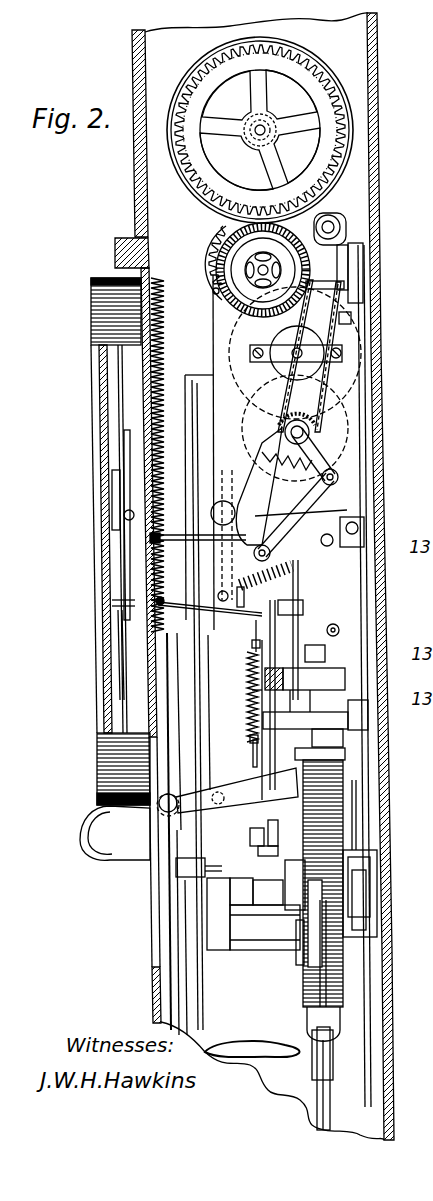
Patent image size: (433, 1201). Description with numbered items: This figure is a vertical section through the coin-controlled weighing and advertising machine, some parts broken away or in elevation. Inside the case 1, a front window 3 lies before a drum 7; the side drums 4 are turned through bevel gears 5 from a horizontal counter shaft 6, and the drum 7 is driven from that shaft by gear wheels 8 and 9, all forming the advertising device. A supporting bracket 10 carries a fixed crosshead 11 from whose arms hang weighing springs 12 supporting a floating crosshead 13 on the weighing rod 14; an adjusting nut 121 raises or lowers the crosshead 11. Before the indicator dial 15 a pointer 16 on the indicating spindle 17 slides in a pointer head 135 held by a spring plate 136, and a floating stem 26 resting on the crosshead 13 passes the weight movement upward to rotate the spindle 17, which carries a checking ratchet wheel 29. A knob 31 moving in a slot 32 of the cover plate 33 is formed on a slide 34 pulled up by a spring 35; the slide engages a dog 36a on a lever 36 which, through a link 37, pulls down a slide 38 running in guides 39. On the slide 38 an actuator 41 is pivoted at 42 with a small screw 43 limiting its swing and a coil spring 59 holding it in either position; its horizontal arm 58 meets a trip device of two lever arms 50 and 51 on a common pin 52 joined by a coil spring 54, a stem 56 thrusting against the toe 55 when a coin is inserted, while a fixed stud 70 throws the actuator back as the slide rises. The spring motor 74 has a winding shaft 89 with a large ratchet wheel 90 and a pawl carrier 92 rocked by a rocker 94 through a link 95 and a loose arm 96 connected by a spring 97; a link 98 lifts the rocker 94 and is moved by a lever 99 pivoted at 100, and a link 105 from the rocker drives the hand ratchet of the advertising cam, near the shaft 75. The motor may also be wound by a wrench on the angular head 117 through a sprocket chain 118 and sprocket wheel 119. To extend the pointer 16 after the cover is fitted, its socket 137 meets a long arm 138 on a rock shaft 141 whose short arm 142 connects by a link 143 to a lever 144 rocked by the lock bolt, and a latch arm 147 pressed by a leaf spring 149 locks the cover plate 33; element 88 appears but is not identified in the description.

The case 1 is at (384, 864).
The front window 3 is at (133, 148).
The rotatable drums 4 is at (272, 1068).
The bevel gears 5 is at (212, 268).
The horizontal counter shaft 6 is at (212, 256).
The drum 7 is at (300, 60).
The gear wheel 8 is at (196, 170).
The gear wheel 9 is at (222, 230).
The supporting bracket 10 is at (345, 788).
The fixed crosshead 11 is at (340, 708).
The weighing springs 12 is at (310, 985).
The floating crosshead 13 is at (314, 1062).
The weighing rod 14 is at (331, 1112).
The indicator dial 15 is at (98, 750).
The indicating pointer 16 is at (112, 603).
The indicating spindle 17 is at (172, 533).
The floating stem 26 is at (281, 680).
The ratchet wheel 29 is at (229, 595).
The knob 31 is at (92, 858).
The slot 32 is at (149, 912).
The cover plate 33 is at (152, 988).
The slide 34 is at (170, 705).
The spring 35 is at (165, 332).
The lever 36 is at (215, 906).
The dog 36a is at (176, 868).
The link 37 is at (262, 778).
The slide 38 is at (270, 640).
The guides 39 is at (268, 678).
The actuator 41 is at (250, 654).
The pivot 42 is at (250, 739).
The small screw 43 is at (250, 700).
The lever arm 50 is at (258, 836).
The lever arm 51 is at (234, 832).
The common pin 52 is at (245, 847).
The coil spring 54 is at (270, 893).
The toe 55 is at (298, 910).
The stem 56 is at (310, 962).
The horizontal arm 58 is at (253, 752).
The coil spring 59 is at (250, 692).
The fixed stud 70 is at (296, 703).
The motor 74 is at (213, 350).
The shaft 75 is at (297, 350).
The stud 88 is at (213, 291).
The winding shaft 89 is at (266, 442).
The large ratchet wheel 90 is at (292, 472).
The pawl carrier 92 is at (322, 462).
The rocker 94 is at (240, 512).
The link 95 is at (296, 515).
The loose arm 96 is at (222, 560).
The spring 97 is at (269, 575).
The link 98 is at (358, 592).
The lever 99 is at (358, 900).
The pivot 100 is at (360, 826).
The link 105 is at (342, 490).
The angular head 117 is at (346, 222).
The sprocket chain 118 is at (336, 340).
The sprocket wheel 119 is at (306, 418).
The adjusting nut 121 is at (345, 754).
The pointer head 135 is at (124, 478).
The spring plate 136 is at (112, 516).
The socket 137 is at (118, 616).
The long arm 138 is at (209, 617).
The rock shaft 141 is at (340, 628).
The short arm 142 is at (309, 600).
The link 143 is at (326, 650).
The lever 144 is at (232, 812).
The latch arm 147 is at (196, 800).
The leaf spring 149 is at (296, 940).